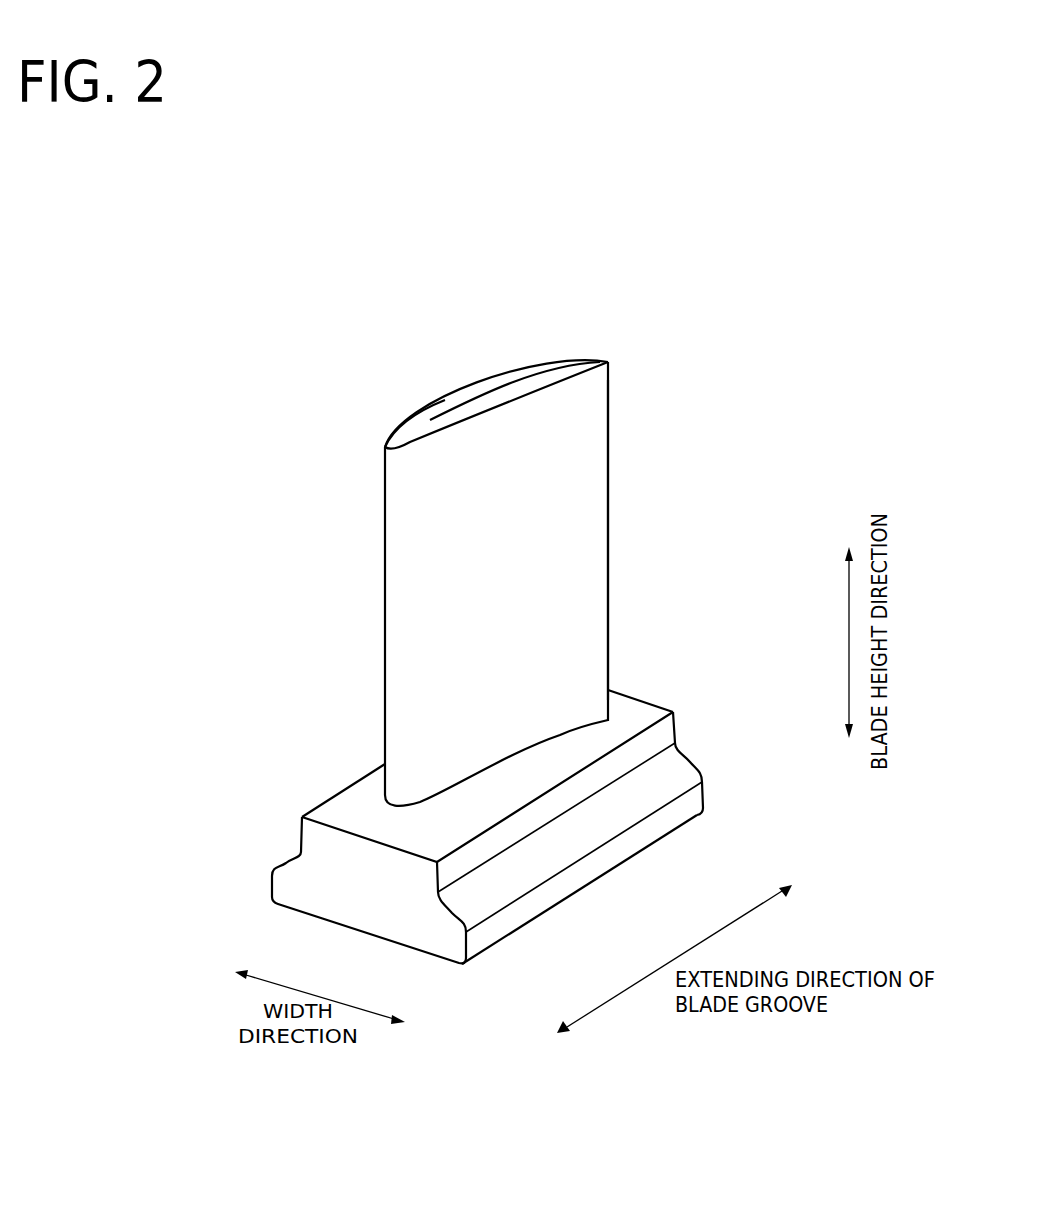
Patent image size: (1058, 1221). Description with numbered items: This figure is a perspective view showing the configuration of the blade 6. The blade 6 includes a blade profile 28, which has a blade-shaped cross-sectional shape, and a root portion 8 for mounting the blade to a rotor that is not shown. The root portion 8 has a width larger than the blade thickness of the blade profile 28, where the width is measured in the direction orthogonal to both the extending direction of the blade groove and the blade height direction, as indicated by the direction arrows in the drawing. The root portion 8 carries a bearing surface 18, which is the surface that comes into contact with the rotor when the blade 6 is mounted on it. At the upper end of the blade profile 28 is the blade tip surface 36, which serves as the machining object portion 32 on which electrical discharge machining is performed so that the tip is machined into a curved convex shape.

The blade 6 is at (609, 557).
The root portion 8 is at (677, 727).
The bearing surface 18 is at (287, 856).
The blade profile 28 is at (609, 451).
The machining object portion 32 is at (530, 380).
The blade tip surface 36 is at (430, 422).